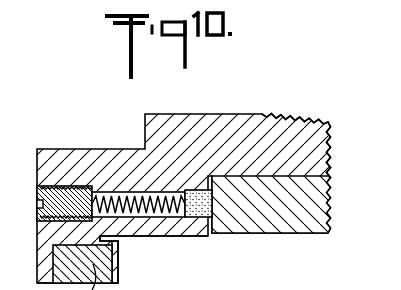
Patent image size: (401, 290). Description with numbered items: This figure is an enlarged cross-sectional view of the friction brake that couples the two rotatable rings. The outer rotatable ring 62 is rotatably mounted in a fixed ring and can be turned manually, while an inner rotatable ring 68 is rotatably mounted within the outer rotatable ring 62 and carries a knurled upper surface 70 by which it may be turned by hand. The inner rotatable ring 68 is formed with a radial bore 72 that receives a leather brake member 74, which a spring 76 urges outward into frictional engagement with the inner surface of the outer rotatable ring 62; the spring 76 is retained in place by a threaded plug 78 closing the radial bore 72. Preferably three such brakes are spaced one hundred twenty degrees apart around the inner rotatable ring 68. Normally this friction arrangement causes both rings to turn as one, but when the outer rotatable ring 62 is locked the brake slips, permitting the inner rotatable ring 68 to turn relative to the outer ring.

The outer rotatable ring 62 is at (268, 222).
The inner rotatable ring 68 is at (187, 114).
The knurled upper surface 70 is at (293, 119).
The radial bore 72 is at (117, 192).
The leather brake member 74 is at (203, 203).
The spring 76 is at (154, 211).
The threaded plug 78 is at (68, 188).